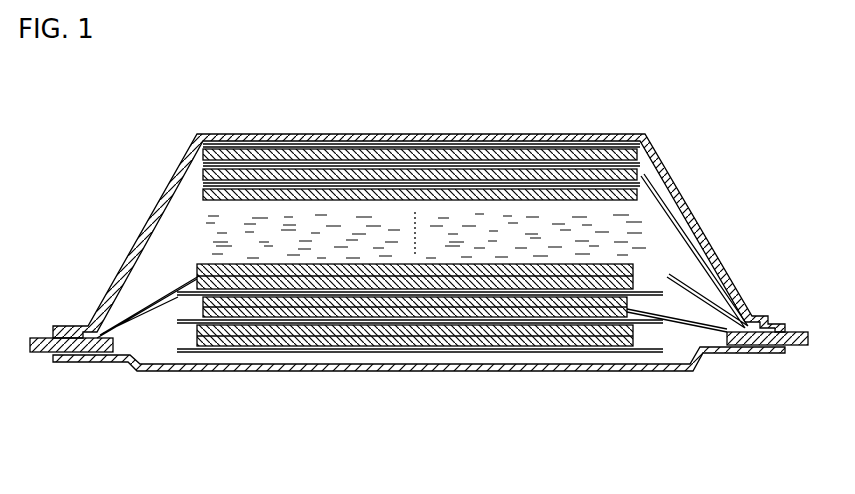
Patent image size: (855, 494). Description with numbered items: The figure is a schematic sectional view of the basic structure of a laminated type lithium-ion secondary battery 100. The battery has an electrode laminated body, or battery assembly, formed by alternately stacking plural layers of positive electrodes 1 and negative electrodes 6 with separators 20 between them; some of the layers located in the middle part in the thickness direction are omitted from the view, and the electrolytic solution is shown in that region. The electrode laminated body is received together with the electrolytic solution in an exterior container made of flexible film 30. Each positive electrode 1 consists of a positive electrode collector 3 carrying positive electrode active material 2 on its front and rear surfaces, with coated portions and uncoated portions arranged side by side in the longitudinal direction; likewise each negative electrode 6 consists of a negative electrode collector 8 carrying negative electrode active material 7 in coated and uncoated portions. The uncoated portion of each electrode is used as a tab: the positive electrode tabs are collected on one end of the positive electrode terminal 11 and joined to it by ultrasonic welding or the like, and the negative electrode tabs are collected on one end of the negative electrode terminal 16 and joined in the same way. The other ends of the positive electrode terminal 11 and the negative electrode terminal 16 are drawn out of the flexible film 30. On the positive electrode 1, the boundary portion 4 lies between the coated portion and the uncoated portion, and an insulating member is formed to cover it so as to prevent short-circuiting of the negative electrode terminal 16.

The lithium-ion secondary battery 100 is at (514, 85).
The positive electrode 1 is at (172, 185).
The positive electrode active material 2 is at (527, 187).
The positive electrode collector 3 is at (705, 290).
The boundary portion 4 is at (627, 307).
The negative electrode 6 is at (645, 282).
The negative electrode active material 7 is at (283, 158).
The negative electrode collector 8 is at (153, 337).
The positive electrode terminal 11 is at (802, 346).
The negative electrode terminal 16 is at (42, 353).
The separator 20 is at (185, 353).
The flexible film 30 is at (320, 370).